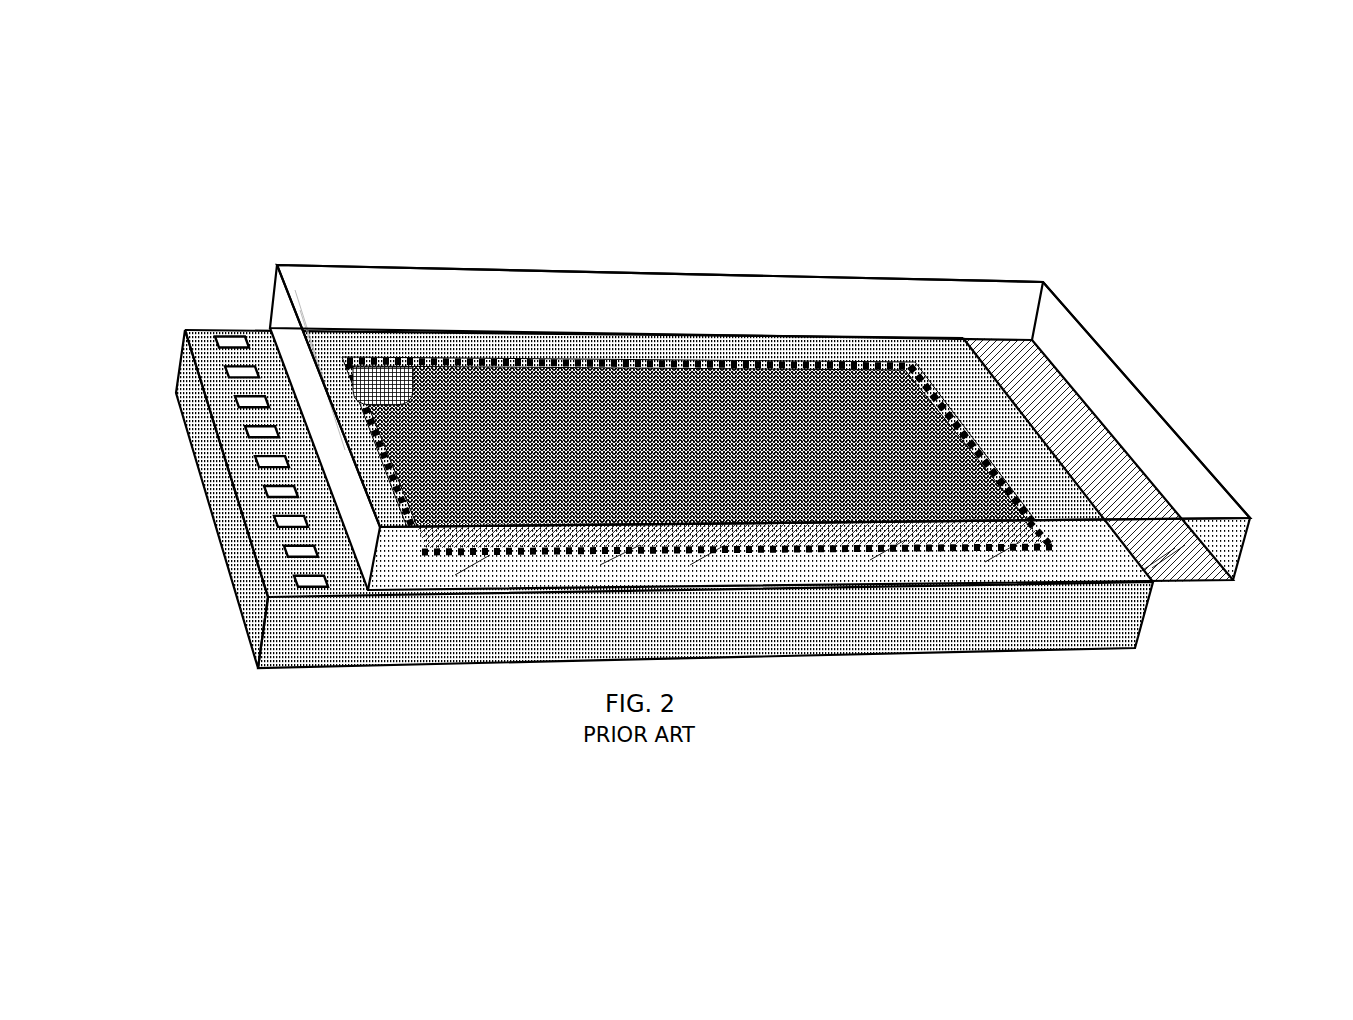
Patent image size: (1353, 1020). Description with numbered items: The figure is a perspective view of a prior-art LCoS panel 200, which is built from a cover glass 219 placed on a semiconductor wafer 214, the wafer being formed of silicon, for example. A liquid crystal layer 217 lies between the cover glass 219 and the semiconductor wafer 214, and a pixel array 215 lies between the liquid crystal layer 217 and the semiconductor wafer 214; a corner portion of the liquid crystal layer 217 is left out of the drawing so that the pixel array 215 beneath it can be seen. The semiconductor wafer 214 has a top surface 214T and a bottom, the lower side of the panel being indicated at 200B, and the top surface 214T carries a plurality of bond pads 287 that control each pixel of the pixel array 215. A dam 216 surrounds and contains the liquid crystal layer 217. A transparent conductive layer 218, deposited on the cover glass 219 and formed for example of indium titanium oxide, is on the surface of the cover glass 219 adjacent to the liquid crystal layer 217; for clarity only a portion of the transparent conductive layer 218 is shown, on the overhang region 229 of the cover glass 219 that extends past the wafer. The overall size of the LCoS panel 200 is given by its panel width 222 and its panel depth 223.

The LCoS panel 200 is at (278, 172).
The bottom portion of assembly 200B is at (188, 465).
The semiconductor wafer 214 is at (770, 636).
The top surface 214T is at (204, 338).
The pixel array 215 is at (402, 393).
The dam 216 is at (918, 367).
The liquid crystal layer 217 is at (840, 480).
The transparent conductive layer 218 is at (1078, 426).
The cover glass 219 is at (825, 571).
The panel width 222 is at (1312, 516).
The panel depth 223 is at (1105, 528).
The overhang region 229 is at (1237, 597).
The bond pads 287 is at (235, 326).